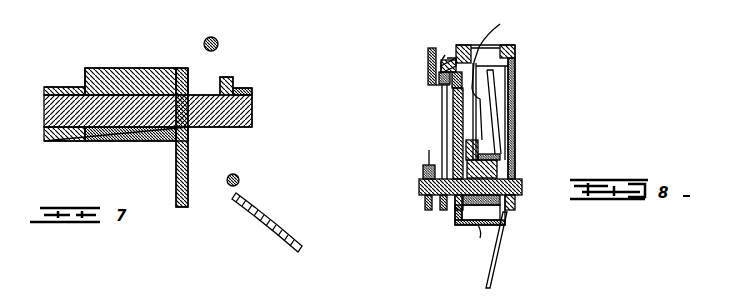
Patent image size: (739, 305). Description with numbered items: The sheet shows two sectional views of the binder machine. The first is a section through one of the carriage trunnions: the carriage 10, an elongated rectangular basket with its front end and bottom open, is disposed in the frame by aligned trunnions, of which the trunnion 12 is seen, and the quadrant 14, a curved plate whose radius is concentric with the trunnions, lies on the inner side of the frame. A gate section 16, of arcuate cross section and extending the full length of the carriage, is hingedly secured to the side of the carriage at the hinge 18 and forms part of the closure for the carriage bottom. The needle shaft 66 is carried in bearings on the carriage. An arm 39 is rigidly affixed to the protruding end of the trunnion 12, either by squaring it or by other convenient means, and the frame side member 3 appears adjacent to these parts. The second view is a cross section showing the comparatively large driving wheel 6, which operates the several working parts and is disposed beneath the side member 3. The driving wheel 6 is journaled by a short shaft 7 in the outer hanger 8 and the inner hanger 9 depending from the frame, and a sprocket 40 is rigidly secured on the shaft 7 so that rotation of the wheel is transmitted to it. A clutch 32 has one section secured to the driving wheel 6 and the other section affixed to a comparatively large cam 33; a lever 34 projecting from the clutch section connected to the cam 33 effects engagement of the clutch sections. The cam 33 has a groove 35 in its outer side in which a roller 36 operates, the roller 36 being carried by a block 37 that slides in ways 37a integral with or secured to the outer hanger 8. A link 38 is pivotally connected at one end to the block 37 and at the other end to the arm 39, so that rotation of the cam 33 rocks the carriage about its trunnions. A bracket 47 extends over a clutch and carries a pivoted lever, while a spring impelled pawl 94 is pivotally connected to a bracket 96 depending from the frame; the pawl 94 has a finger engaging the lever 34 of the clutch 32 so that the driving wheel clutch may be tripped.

In FIG. 7, the side member 3 is at (136, 141).
In FIG. 8, the side member 3 is at (517, 50).
In FIG. 8, the driving wheel 6 is at (505, 240).
In FIG. 8, the shaft 7 is at (418, 190).
In FIG. 8, the outer hanger 8 is at (441, 212).
In FIG. 8, the inner hanger 9 is at (516, 211).
In FIG. 7, the carriage 10 is at (233, 90).
In FIG. 7, the trunnion 12 is at (250, 126).
In FIG. 7, the quadrant 14 is at (188, 200).
In FIG. 7, the gate section 16 is at (280, 230).
In FIG. 7, the hinge 18 is at (239, 180).
In FIG. 8, the clutch 32 is at (480, 232).
In FIG. 8, the cam 33 is at (445, 129).
In FIG. 8, the lever 34 is at (500, 143).
In FIG. 8, the groove 35 is at (448, 100).
In FIG. 8, the roller 36 is at (440, 88).
In FIG. 8, the block 37 is at (445, 55).
In FIG. 8, the ways 37a is at (442, 142).
In FIG. 8, the link 38 is at (428, 67).
In FIG. 7, the arm 39 is at (67, 141).
In FIG. 8, the sprocket 40 is at (426, 206).
In FIG. 8, the bracket 47 is at (426, 168).
In FIG. 7, the needle shaft 66 is at (218, 44).
In FIG. 8, the pawl 94 is at (500, 112).
In FIG. 8, the bracket 96 is at (495, 75).